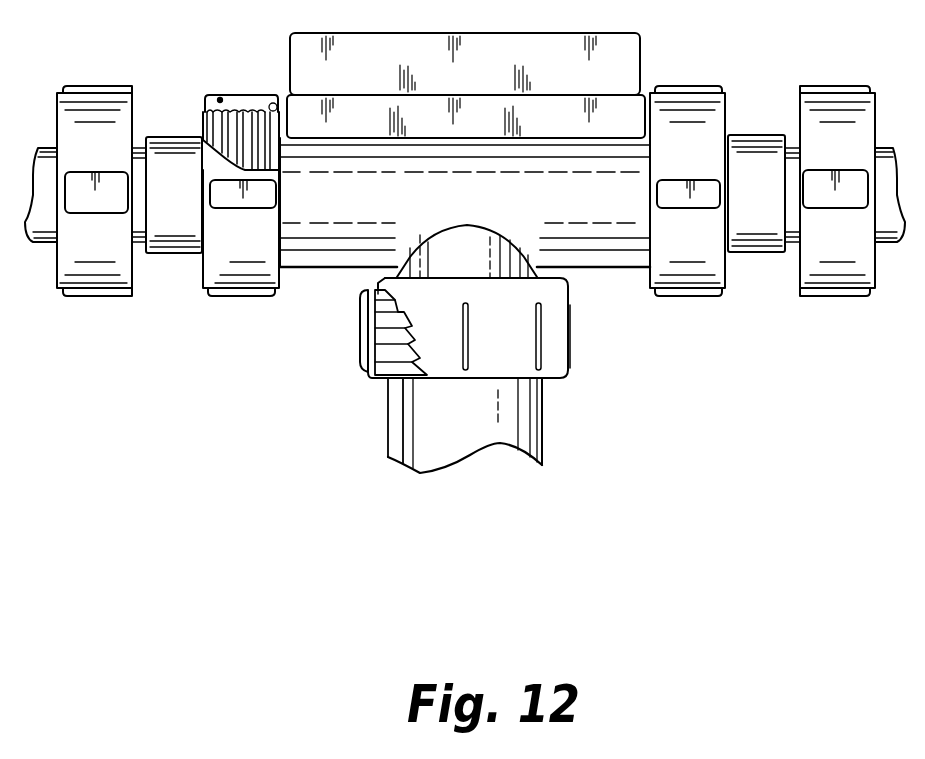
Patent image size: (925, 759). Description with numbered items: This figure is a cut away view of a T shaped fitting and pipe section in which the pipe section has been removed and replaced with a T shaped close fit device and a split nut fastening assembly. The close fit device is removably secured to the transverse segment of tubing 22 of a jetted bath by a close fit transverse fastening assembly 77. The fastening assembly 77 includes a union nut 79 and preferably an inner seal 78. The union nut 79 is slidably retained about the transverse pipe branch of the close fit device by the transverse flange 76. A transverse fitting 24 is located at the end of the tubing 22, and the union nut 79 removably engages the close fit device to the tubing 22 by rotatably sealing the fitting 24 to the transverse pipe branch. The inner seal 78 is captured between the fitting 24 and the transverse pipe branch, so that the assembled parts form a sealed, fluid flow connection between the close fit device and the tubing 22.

The transverse segment of tubing 22 is at (530, 417).
The transverse fitting 24 is at (388, 365).
The transverse flange 76 is at (383, 300).
The close fit transverse fastening assembly 77 is at (571, 376).
The inner seal 78 is at (378, 303).
The union nut 79 is at (557, 327).